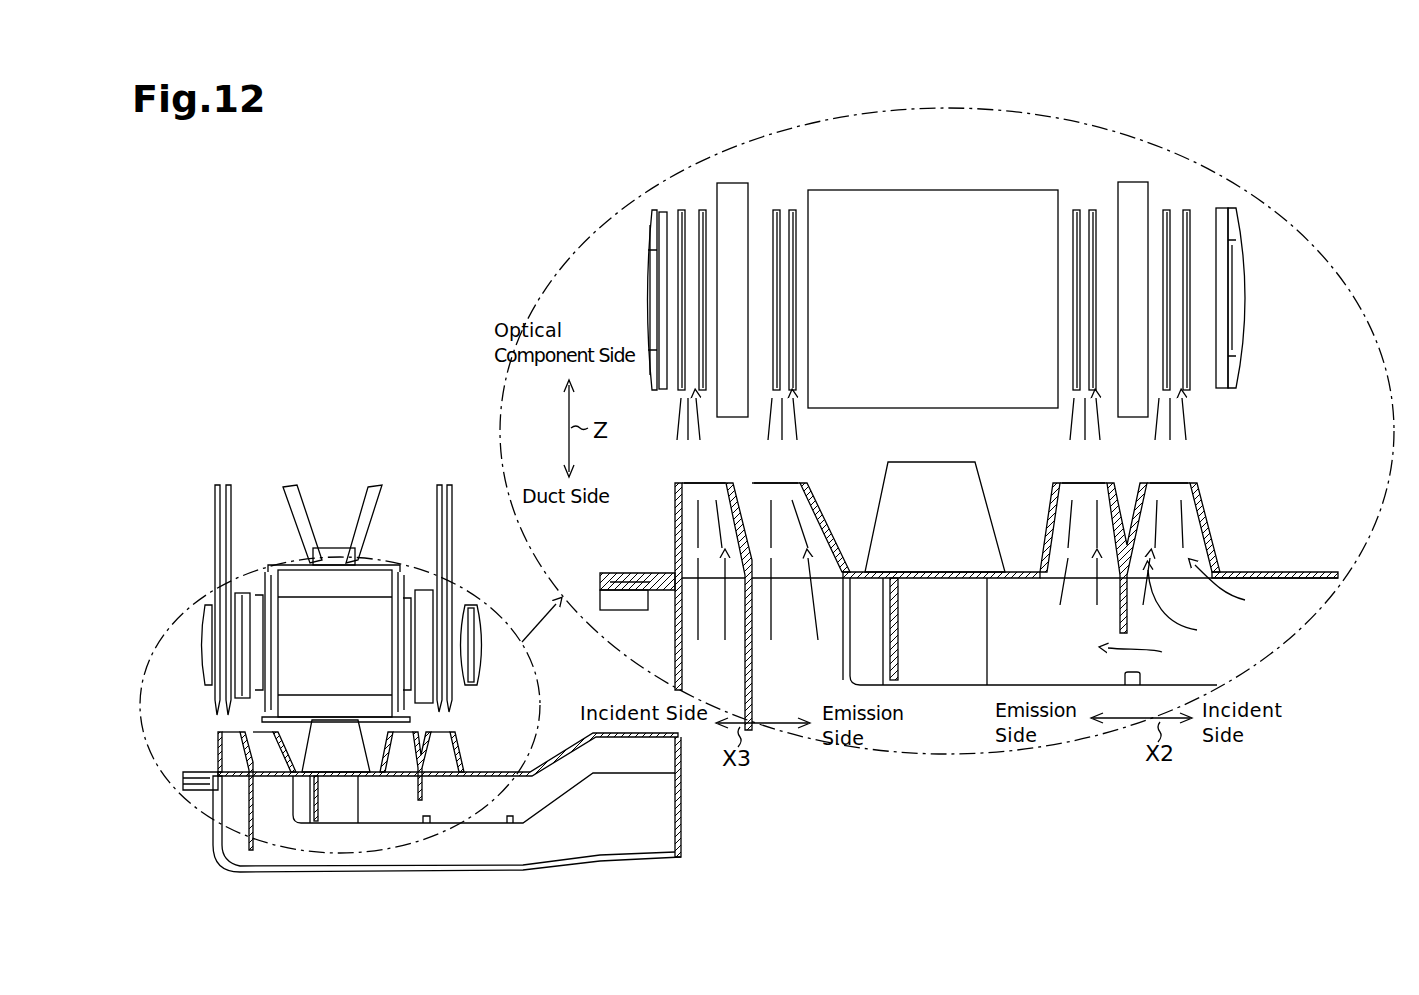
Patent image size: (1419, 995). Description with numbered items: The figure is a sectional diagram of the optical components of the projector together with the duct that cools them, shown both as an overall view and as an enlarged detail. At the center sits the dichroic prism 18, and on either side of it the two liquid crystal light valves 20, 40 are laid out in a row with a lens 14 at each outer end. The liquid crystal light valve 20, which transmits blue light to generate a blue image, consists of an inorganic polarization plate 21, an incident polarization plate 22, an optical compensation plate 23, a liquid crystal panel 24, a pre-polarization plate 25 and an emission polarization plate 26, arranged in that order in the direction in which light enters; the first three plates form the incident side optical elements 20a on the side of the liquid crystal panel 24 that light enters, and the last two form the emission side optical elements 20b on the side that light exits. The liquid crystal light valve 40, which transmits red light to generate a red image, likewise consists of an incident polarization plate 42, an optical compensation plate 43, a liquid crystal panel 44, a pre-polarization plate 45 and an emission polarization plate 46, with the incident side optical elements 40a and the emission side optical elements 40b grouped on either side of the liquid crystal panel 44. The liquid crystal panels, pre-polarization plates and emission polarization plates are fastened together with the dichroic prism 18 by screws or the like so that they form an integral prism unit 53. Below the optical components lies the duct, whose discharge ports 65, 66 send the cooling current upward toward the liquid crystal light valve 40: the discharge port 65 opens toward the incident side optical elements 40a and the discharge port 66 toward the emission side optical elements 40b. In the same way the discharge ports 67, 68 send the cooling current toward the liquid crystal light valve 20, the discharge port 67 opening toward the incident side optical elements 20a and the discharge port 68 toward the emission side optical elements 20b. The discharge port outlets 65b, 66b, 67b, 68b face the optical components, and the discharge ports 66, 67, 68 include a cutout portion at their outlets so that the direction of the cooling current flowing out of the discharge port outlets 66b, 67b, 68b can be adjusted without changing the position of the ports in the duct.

The lens 14 is at (642, 300).
The dichroic prism 18 is at (928, 198).
The liquid crystal light valve 20 is at (532, 374).
The incident side optical elements 20a is at (665, 239).
The emission side optical elements 20b is at (788, 239).
The inorganic polarization plate 21 is at (660, 210).
The incident polarization plate 22 is at (680, 210).
The optical compensation plate 23 is at (704, 258).
The liquid crystal panel 24 is at (724, 183).
The pre-polarization plate 25 is at (777, 210).
The emission polarization plate 26 is at (806, 271).
The liquid crystal light valve 40 is at (782, 375).
The incident side optical elements 40a is at (1181, 238).
The emission side optical elements 40b is at (1075, 238).
The incident polarization plate 42 is at (1200, 256).
The optical compensation plate 43 is at (1167, 210).
The liquid crystal panel 44 is at (1135, 182).
The pre-polarization plate 45 is at (1092, 210).
The emission polarization plate 46 is at (1076, 210).
The prism unit 53 is at (334, 530).
The discharge port 65 is at (849, 609).
The discharge port outlet 65b is at (1172, 462).
The discharge port 66 is at (731, 623).
The discharge port outlet 66b is at (1088, 462).
The discharge port 67 is at (453, 648).
The discharge port outlet 67b is at (724, 478).
The discharge port 68 is at (563, 609).
The discharge port outlet 68b is at (796, 478).